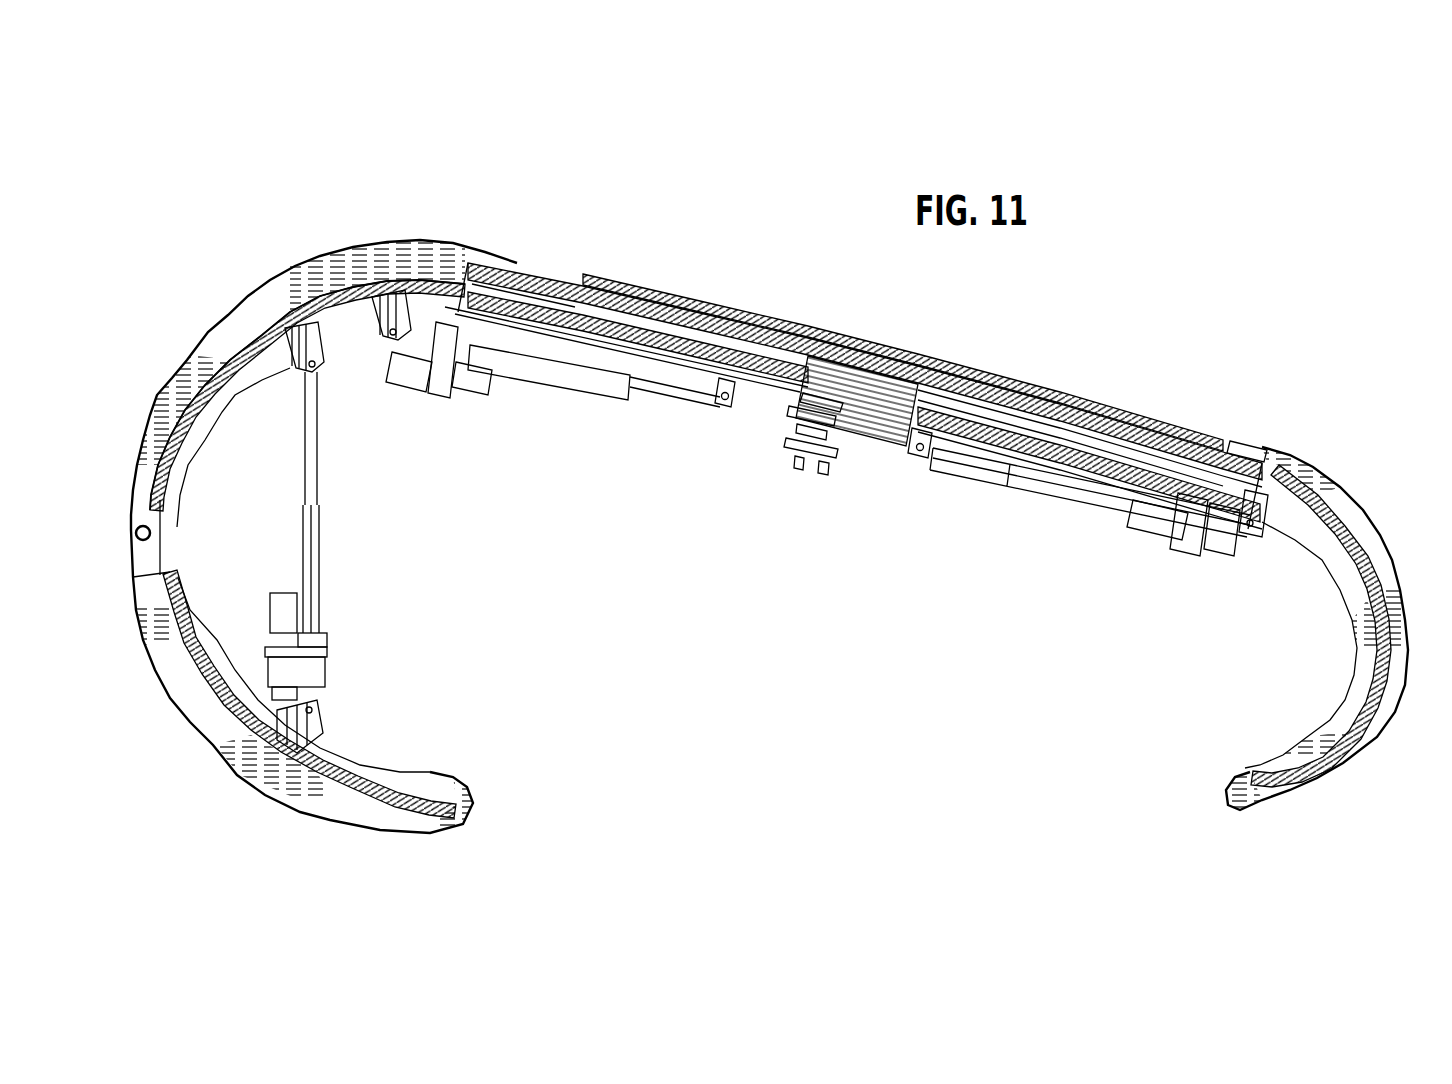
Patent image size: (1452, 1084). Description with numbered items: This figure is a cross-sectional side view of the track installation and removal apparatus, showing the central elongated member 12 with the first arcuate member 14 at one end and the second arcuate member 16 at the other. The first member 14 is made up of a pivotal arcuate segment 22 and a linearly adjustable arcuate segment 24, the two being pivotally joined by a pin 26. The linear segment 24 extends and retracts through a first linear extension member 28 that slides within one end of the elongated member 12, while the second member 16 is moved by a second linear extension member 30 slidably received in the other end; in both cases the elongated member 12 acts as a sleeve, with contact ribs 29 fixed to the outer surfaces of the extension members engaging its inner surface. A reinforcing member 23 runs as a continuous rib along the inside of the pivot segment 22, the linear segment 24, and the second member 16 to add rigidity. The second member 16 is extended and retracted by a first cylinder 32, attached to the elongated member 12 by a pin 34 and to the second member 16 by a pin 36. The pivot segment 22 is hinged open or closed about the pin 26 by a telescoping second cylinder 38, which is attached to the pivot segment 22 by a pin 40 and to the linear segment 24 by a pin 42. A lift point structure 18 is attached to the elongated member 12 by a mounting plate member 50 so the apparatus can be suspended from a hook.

The elongated member 12 is at (1020, 380).
The first arcuate member 14 is at (190, 449).
The second arcuate member 16 is at (1373, 527).
The lift point structure 18 is at (790, 460).
The pivotal arcuate segment 22 is at (280, 800).
The reinforcing member 23 is at (340, 318).
The linearly adjustable arcuate segment 24 is at (244, 298).
The pin 26 is at (158, 533).
The first linear extension member 28 is at (525, 263).
The contact ribs 29 is at (592, 280).
The second linear extension member 30 is at (1260, 441).
The first extendable and retractable cylinder 32 is at (1153, 548).
The pin 34 is at (920, 460).
The pin 36 is at (1257, 530).
The second retractable cylinder 38 is at (325, 672).
The pin 40 is at (318, 713).
The pin 42 is at (305, 372).
The mounting plate member 50 is at (840, 413).